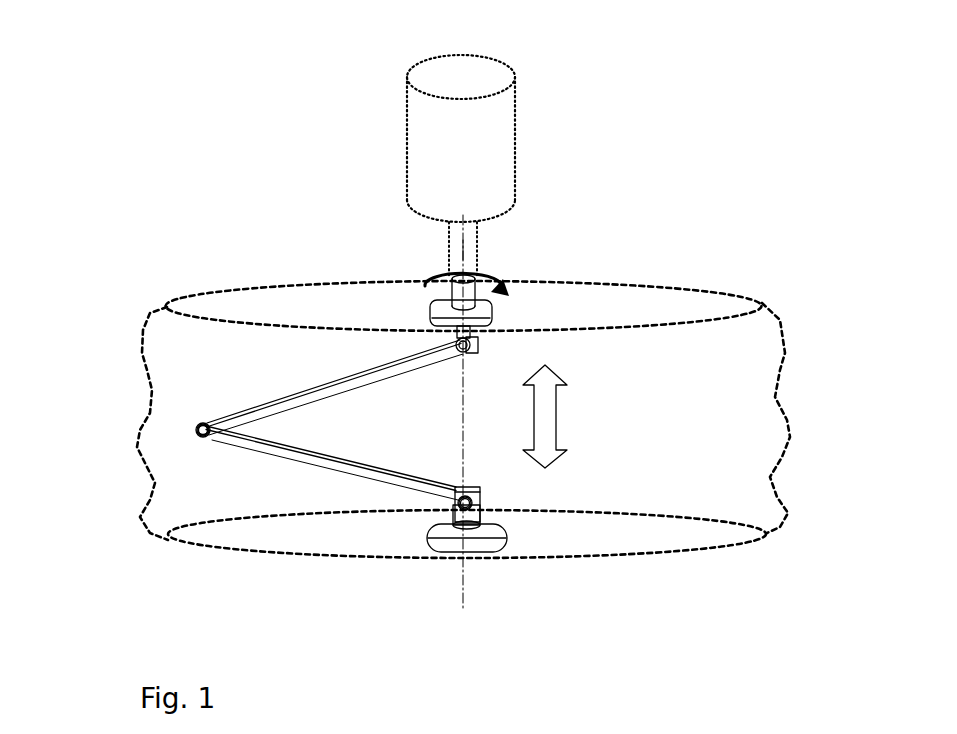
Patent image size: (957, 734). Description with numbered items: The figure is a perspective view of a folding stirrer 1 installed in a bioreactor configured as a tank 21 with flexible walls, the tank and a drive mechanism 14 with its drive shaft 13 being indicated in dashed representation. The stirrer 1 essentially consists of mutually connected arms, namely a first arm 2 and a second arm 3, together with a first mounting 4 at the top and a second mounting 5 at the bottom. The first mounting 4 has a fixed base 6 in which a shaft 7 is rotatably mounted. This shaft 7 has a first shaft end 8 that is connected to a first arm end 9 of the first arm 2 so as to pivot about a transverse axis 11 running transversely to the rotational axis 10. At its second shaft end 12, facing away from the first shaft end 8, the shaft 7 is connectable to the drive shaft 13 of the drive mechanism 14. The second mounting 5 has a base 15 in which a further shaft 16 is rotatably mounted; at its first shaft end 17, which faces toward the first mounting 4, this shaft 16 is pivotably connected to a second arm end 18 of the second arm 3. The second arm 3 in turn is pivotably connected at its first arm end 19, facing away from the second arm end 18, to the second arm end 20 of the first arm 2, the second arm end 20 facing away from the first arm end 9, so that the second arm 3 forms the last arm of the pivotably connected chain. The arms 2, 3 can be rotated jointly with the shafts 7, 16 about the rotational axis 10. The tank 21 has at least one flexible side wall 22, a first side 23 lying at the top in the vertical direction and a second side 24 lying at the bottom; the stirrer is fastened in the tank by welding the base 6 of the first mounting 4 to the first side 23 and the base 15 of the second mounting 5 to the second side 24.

The stirrer 1 is at (262, 108).
The first arm 2 is at (330, 383).
The second arm 3 is at (320, 462).
The first mounting 4 is at (417, 295).
The second mounting 5 is at (413, 540).
The fixed base 6 is at (493, 315).
The shaft 7 is at (452, 304).
The first shaft end 8 is at (487, 330).
The first arm end 9 is at (455, 352).
The rotational axis 10 is at (463, 243).
The transverse axis 11 is at (475, 348).
The second shaft end 12 is at (470, 298).
The drive shaft 13 is at (455, 253).
The drive mechanism 14 is at (490, 130).
The base 15 is at (485, 547).
The shaft 16 is at (503, 532).
The first shaft end 17 is at (480, 487).
The second arm end 18 is at (458, 506).
The first arm end 19 is at (207, 437).
The second arm end 20 is at (202, 424).
The tank 21 is at (198, 360).
The flexible side wall 22 is at (140, 355).
The first side 23 is at (588, 307).
The second side 24 is at (607, 538).